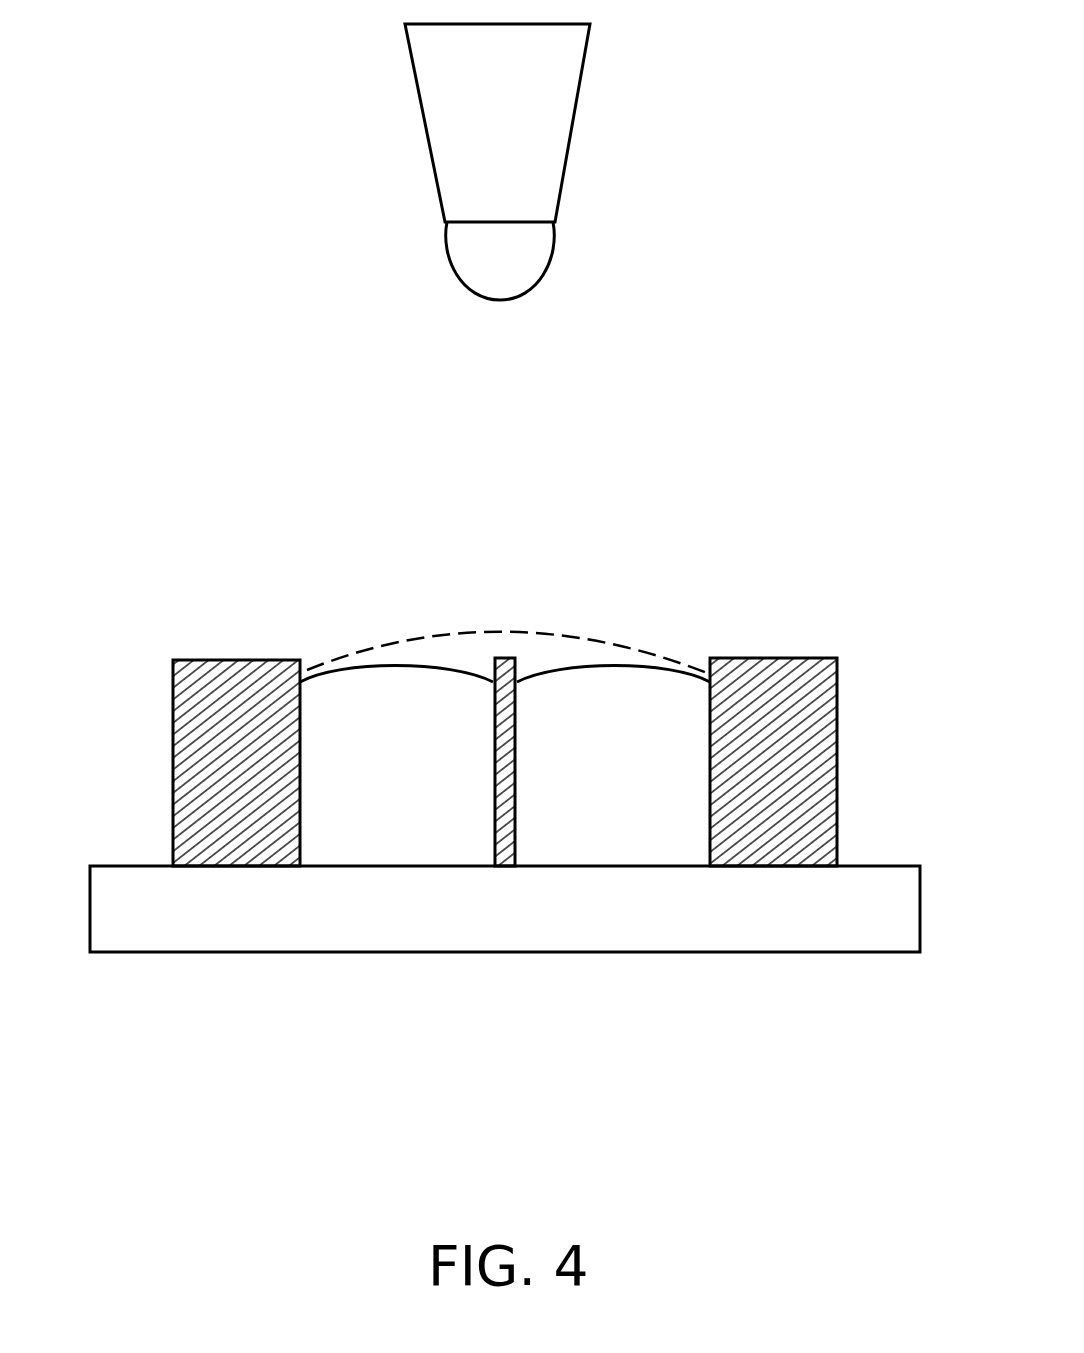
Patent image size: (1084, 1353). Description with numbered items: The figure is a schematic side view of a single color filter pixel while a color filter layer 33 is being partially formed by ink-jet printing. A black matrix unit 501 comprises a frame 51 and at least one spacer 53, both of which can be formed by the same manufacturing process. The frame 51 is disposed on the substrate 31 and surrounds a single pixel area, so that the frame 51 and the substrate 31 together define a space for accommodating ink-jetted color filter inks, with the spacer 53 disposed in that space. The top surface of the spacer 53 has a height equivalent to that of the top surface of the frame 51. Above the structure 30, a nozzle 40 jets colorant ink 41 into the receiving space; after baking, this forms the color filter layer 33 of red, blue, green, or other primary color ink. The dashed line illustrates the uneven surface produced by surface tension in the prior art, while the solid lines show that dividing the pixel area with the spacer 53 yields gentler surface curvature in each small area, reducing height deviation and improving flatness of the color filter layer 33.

The substrate assembly 30 is at (238, 465).
The substrate 31 is at (795, 953).
The color filter layer 33 is at (613, 666).
The nozzle 40 is at (590, 50).
The colorant ink 41 is at (558, 255).
The frame 51 is at (238, 660).
The spacer 53 is at (502, 658).
The black matrix unit 501 is at (806, 574).